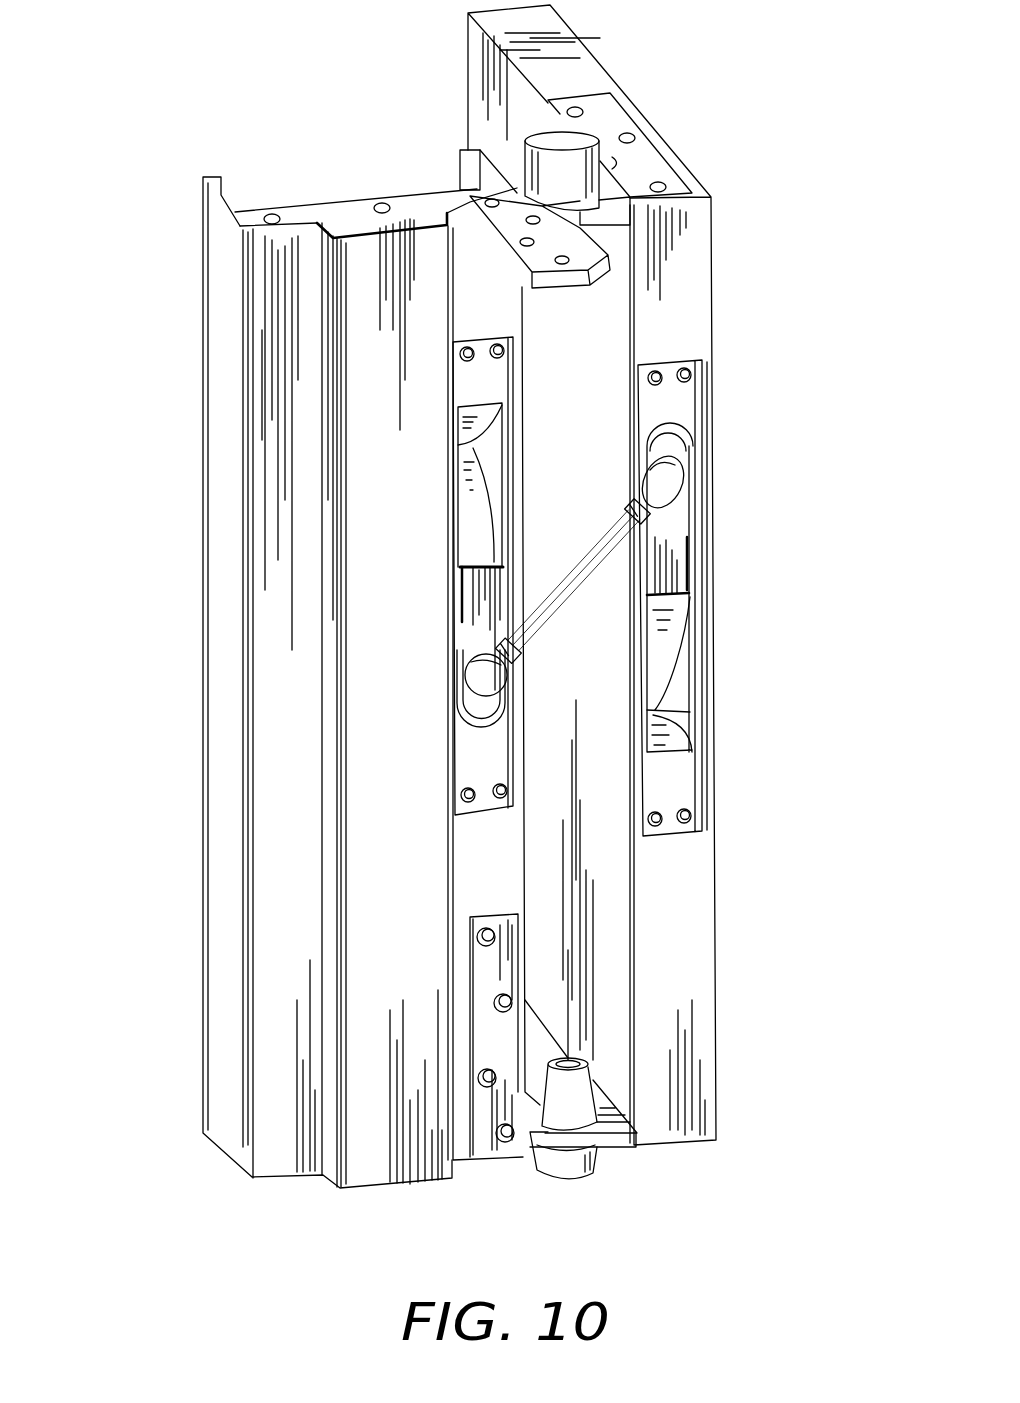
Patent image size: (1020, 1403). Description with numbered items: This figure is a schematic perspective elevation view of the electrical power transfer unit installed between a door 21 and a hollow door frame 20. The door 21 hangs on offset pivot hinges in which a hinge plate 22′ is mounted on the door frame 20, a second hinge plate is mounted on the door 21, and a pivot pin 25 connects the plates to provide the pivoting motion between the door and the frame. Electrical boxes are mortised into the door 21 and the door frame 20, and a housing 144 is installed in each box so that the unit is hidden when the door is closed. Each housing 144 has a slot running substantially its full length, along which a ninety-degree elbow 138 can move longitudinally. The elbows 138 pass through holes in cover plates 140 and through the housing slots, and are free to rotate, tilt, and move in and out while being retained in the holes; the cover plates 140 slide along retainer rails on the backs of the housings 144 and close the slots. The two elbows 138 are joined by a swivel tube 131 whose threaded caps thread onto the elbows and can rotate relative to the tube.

The door frame 20 is at (213, 300).
The door 21 is at (707, 900).
The hinge plate 22′ is at (517, 197).
The pivot pin 25 is at (572, 137).
The swivel tube 131 is at (570, 577).
The 90° elbow 138 is at (470, 677).
The cover plate 140 is at (476, 585).
The housing 144 is at (481, 343).